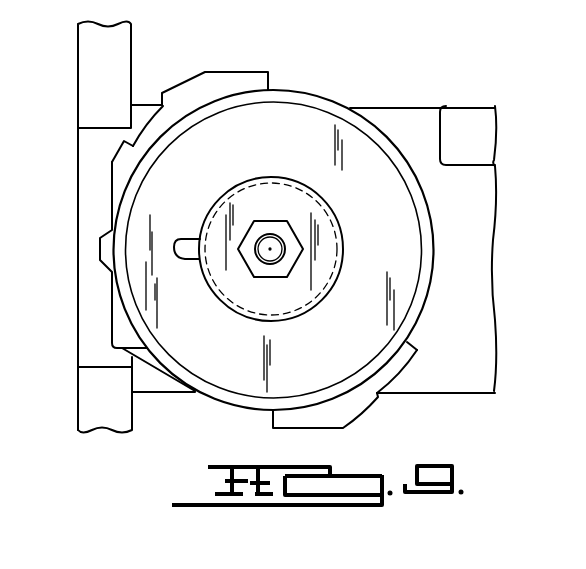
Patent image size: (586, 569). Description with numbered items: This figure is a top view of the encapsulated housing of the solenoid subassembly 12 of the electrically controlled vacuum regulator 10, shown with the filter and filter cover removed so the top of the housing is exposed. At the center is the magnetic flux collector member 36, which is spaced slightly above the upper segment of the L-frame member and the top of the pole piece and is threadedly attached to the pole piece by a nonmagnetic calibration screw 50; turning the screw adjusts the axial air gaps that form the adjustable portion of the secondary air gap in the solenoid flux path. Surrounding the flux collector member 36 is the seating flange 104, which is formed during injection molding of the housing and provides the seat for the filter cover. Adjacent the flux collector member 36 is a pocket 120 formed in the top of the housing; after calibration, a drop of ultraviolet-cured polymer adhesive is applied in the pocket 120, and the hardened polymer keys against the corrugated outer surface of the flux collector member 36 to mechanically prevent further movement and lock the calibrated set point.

The electrically controlled vacuum regulator 10 is at (394, 86).
The encapsulated solenoid subassembly 12 is at (314, 87).
The magnetic flux collector member 36 is at (327, 246).
The nonmagnetic calibration screw 50 is at (293, 235).
The seating flange 104 is at (197, 384).
The pocket 120 is at (181, 236).